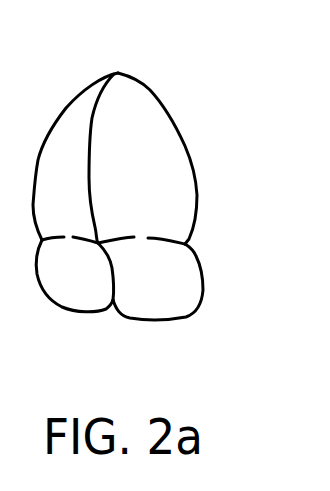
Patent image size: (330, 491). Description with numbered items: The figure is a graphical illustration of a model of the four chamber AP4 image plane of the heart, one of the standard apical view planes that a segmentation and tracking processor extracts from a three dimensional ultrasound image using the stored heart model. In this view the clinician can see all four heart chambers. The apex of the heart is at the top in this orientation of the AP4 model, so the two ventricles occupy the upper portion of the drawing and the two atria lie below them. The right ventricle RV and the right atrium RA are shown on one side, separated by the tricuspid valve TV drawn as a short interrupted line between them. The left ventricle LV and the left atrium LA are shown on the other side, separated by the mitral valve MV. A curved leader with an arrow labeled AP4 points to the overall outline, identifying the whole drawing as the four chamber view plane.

The four chamber image plane AP4 is at (158, 194).
The right ventricle RV is at (75, 156).
The left ventricle LV is at (143, 186).
The right atrium RA is at (74, 276).
The left atrium LA is at (158, 282).
The tricuspid valve TV is at (70, 230).
The mitral valve MV is at (141, 232).